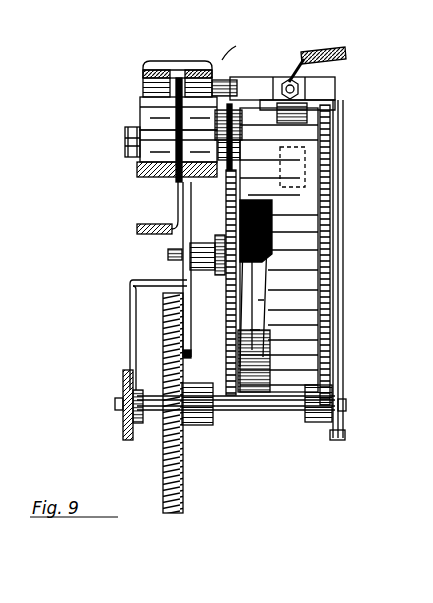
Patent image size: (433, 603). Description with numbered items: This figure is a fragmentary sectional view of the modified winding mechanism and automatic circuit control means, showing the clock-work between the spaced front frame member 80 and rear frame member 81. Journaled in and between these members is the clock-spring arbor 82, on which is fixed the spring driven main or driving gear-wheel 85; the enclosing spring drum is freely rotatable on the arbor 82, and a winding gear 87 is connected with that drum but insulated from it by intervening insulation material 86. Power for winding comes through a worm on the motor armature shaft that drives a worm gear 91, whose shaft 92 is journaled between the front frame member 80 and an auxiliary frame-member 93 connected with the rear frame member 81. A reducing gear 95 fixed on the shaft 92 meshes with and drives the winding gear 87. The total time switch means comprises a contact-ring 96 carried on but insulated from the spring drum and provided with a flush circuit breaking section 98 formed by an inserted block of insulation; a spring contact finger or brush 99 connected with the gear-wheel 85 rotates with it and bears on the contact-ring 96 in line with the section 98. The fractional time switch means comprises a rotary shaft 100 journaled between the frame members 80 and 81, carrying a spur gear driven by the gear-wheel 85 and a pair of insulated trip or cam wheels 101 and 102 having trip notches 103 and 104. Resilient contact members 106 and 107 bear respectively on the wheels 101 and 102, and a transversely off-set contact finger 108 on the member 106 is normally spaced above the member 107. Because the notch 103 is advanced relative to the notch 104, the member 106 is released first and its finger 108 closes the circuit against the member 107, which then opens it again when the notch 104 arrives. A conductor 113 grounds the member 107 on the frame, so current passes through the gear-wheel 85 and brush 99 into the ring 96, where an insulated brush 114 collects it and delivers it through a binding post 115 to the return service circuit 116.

The front frame member 80 is at (333, 193).
The rear frame member 81 is at (191, 317).
The clock-spring arbor 82 is at (168, 257).
The spring driven main or driving gear-wheel 85 is at (230, 338).
The insulation material 86 is at (318, 229).
The winding gear 87 is at (327, 290).
The worm gear 91 is at (184, 438).
The worm gear shaft 92 is at (253, 410).
The auxiliary frame-member 93 is at (123, 428).
The reducing gear 95 is at (313, 424).
The contact-ring 96 is at (307, 315).
The circuit breaking point or section 98 is at (272, 220).
The spring contact finger or brush 99 is at (254, 288).
The rotary shaft 100 is at (255, 130).
The trip or cam wheel 101 is at (200, 166).
The trip or cam wheel 102 is at (156, 170).
The trip notch 103 is at (222, 60).
The trip notch 104 is at (148, 111).
The resilient contact member 106 is at (223, 110).
The resilient contact member 107 is at (146, 75).
The contact finger 108 is at (171, 62).
The conductor 113 is at (137, 228).
The brush 114 is at (303, 110).
The binding post 115 is at (300, 90).
The return service circuit 116 is at (306, 54).